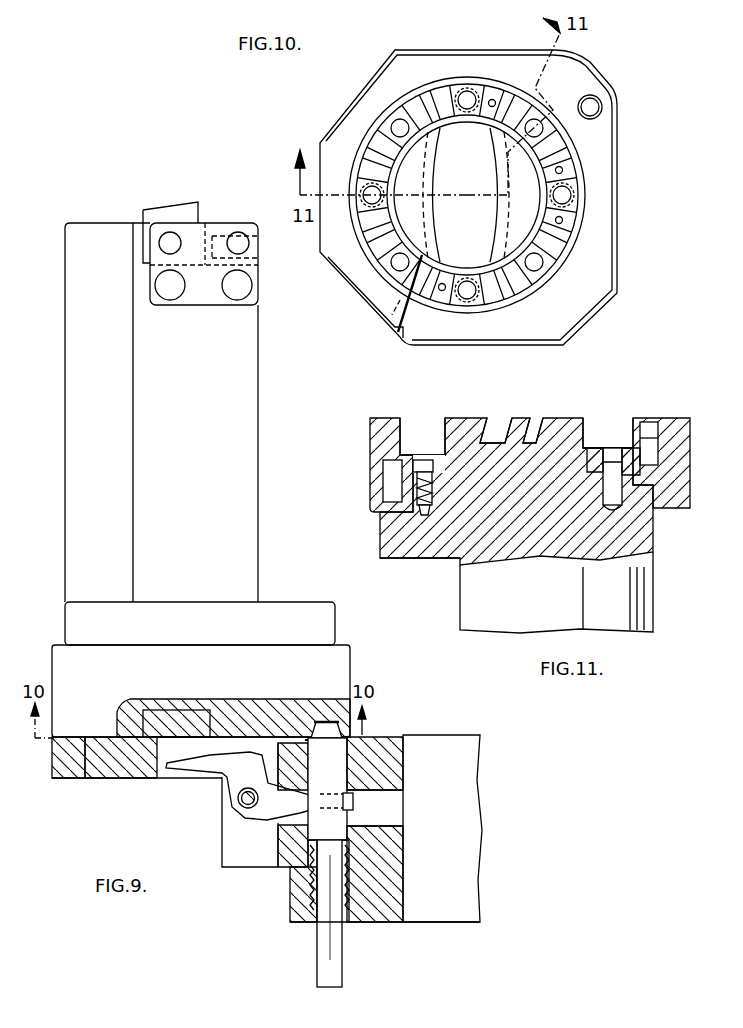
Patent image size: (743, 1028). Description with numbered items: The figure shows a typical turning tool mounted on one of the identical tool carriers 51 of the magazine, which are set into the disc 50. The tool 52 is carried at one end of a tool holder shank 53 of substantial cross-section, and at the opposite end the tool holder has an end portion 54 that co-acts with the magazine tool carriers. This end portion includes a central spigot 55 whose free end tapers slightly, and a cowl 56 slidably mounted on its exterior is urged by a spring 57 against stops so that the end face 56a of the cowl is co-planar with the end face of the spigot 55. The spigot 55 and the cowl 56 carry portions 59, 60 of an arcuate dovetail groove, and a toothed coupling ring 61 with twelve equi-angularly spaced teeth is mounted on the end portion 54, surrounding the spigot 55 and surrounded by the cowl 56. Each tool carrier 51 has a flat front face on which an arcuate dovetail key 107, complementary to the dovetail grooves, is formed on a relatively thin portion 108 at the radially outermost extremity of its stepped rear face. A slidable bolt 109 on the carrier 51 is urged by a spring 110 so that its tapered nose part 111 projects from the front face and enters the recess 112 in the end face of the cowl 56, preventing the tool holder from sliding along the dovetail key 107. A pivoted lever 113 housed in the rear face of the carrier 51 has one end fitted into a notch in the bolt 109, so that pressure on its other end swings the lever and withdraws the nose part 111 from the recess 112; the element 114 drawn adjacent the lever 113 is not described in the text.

In FIG. 9, the disc 50 is at (455, 748).
In FIG. 9, the tool carrier 51 is at (122, 750).
In FIG. 9, the tool 52 is at (188, 213).
In FIG. 9, the tool holder shank 53 is at (242, 441).
In FIG. 11, the tool holder shank 53 is at (508, 612).
In FIG. 9, the end portion 54 is at (262, 614).
In FIG. 11, the end portion 54 is at (477, 480).
In FIG. 9, the central spigot 55 is at (315, 661).
In FIG. 10, the central spigot 55 is at (530, 255).
In FIG. 11, the central spigot 55 is at (470, 437).
In FIG. 10, the cowl 56 is at (487, 60).
In FIG. 11, the cowl 56 is at (384, 437).
In FIG. 11, the end face of the cowl 56a is at (416, 421).
In FIG. 11, the spring 57 is at (648, 422).
In FIG. 10, the dovetail groove portion 59 is at (448, 235).
In FIG. 11, the dovetail groove portion 59 is at (546, 432).
In FIG. 10, the dovetail groove portion 60 is at (458, 78).
In FIG. 11, the dovetail groove portion 60 is at (512, 427).
In FIG. 10, the toothed coupling ring 61 is at (466, 300).
In FIG. 11, the toothed coupling ring 61 is at (440, 446).
In FIG. 9, the arcuate dovetail key 107 is at (182, 718).
In FIG. 9, the thin portion 108 is at (138, 762).
In FIG. 9, the slidable bolt 109 is at (348, 838).
In FIG. 9, the spring 110 is at (306, 861).
In FIG. 9, the tapered nose part 111 is at (313, 727).
In FIG. 9, the recess 112 is at (326, 721).
In FIG. 10, the recess 112 is at (593, 107).
In FIG. 9, the pivoted lever 113 is at (240, 808).
In FIG. 9, the pawl blade 114 is at (215, 746).